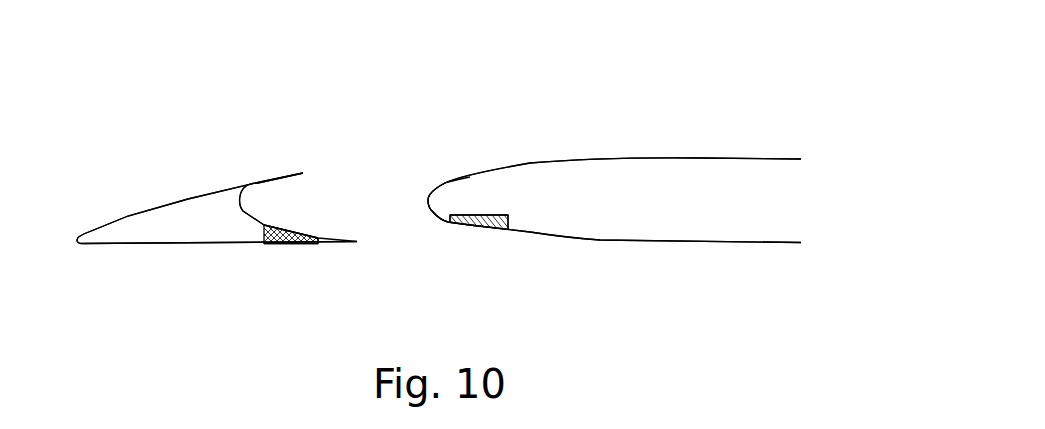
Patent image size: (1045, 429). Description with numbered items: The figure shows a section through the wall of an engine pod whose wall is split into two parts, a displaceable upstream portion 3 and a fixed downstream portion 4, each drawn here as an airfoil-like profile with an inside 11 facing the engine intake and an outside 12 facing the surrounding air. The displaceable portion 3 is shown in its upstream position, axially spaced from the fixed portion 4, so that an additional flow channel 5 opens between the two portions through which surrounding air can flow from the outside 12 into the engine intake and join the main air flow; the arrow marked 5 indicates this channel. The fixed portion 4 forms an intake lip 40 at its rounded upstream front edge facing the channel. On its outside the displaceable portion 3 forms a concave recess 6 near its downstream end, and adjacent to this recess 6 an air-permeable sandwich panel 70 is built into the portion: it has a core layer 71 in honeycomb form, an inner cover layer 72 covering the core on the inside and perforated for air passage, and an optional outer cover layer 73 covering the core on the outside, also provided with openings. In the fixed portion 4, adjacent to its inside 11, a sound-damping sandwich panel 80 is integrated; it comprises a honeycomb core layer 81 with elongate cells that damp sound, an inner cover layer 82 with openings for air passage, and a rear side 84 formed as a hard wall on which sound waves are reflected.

The displaceable portion 3 is at (188, 210).
The fixed portion 4 is at (592, 243).
The additional flow channel 5 is at (386, 178).
The recess 6 is at (242, 207).
The inside 11 is at (170, 246).
The outside 12 is at (128, 215).
The intake lip 40 is at (452, 184).
The sandwich panel 70 is at (273, 253).
The core layer 71 is at (293, 226).
The inner cover layer 72 is at (297, 246).
The outer cover layer 73 is at (318, 234).
The sandwich panel 80 is at (482, 240).
The core layer 81 is at (497, 233).
The inner cover layer 82 is at (463, 231).
The rear side 84 is at (492, 214).